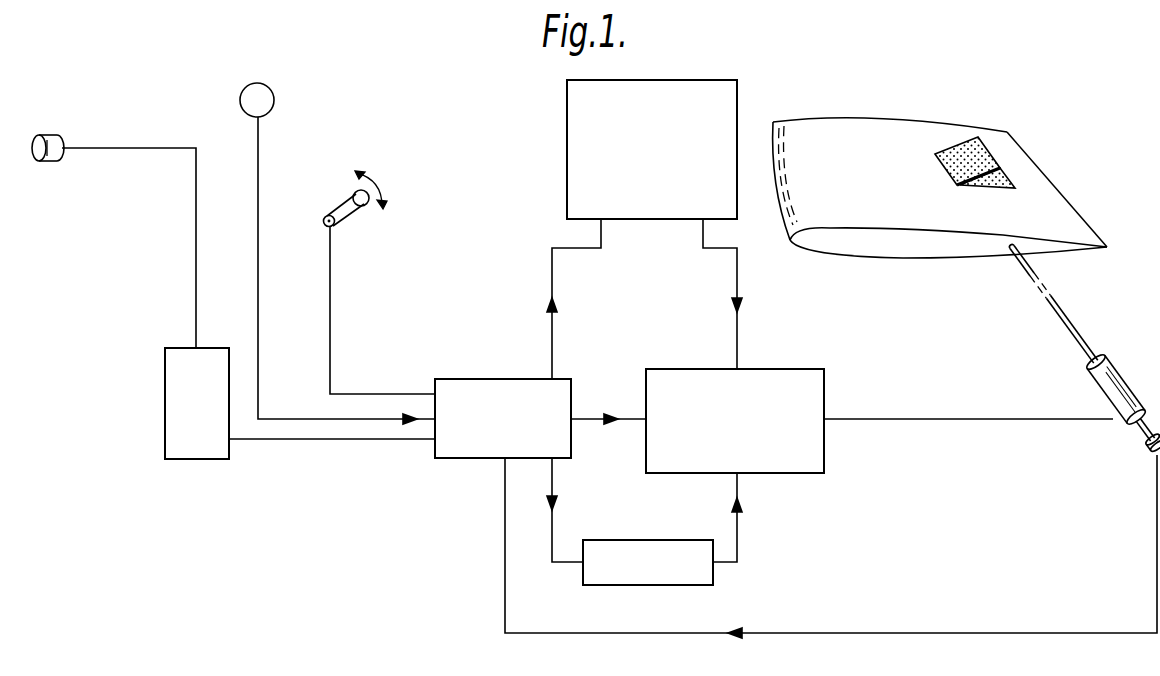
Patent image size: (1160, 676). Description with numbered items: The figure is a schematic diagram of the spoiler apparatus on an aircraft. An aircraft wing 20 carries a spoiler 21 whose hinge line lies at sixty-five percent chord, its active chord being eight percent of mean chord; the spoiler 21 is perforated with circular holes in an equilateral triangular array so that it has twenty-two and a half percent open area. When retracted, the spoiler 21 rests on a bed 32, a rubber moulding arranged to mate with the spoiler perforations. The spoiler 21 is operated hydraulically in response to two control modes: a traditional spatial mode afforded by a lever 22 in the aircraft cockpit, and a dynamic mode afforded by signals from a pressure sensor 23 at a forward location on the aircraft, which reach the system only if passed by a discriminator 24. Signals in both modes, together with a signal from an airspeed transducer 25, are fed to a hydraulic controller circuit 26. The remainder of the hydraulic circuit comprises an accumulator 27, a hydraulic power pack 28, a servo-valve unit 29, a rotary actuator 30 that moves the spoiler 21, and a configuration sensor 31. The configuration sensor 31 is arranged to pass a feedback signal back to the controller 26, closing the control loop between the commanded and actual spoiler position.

The aircraft wing 20 is at (866, 191).
The spoiler 21 is at (963, 148).
The lever 22 is at (343, 207).
The pressure sensor 23 is at (52, 135).
The discriminator 24 is at (211, 416).
The airspeed transducer 25 is at (270, 100).
The hydraulic controller circuit 26 is at (516, 430).
The accumulator 27 is at (663, 574).
The hydraulic power pack 28 is at (666, 164).
The servo-valve unit 29 is at (751, 430).
The rotary actuator 30 is at (1105, 378).
The configuration sensor 31 is at (1143, 451).
The bed 32 is at (995, 169).